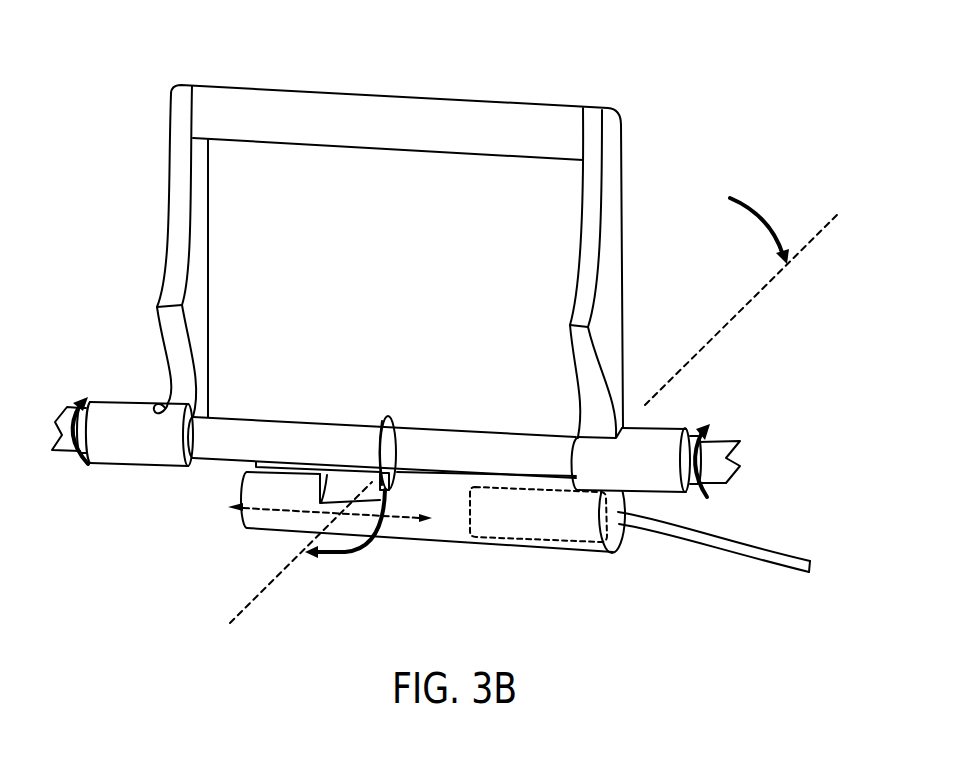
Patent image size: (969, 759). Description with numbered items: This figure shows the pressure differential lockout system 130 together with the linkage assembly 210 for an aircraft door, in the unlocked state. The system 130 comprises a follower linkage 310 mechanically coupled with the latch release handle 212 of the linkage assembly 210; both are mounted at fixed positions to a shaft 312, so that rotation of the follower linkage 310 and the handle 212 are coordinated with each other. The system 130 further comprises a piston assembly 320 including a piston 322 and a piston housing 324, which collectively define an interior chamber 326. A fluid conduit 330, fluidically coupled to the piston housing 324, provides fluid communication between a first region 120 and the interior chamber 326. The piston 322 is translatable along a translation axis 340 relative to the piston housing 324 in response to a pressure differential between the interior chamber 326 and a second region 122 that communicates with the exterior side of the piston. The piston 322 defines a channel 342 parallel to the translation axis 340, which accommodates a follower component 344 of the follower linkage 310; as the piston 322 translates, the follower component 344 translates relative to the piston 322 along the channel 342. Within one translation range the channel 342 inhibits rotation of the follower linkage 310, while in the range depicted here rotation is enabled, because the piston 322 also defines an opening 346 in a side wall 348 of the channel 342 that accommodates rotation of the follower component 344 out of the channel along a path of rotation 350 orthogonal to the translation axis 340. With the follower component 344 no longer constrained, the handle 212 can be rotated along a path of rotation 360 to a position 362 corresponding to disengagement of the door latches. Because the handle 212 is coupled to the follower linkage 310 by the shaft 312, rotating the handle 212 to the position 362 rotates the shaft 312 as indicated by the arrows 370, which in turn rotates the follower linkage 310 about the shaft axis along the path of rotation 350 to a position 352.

The first region 120 is at (824, 568).
The second region 122 is at (212, 571).
The pressure differential lockout system 130 is at (632, 567).
The linkage assembly 210 is at (495, 240).
The latch release handle 212 is at (325, 115).
The follower linkage 310 is at (389, 417).
The shaft 312 is at (62, 408).
The piston assembly 320 is at (426, 494).
The piston 322 is at (260, 528).
The piston housing 324 is at (512, 547).
The interior chamber 326 is at (560, 535).
The fluid conduit 330 is at (753, 557).
The translation axis 340 is at (329, 514).
The channel 342 is at (246, 466).
The follower component 344 is at (392, 480).
The opening 346 is at (350, 484).
The side wall 348 is at (321, 476).
The path of rotation 350 is at (333, 552).
The position 352 is at (301, 552).
The path of rotation 360 is at (618, 178).
The position 362 is at (741, 309).
The arrows 370 is at (408, 458).